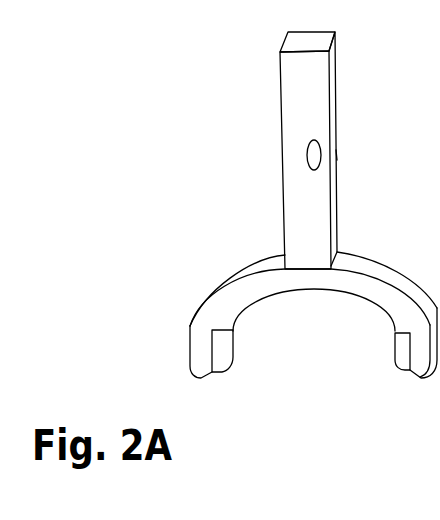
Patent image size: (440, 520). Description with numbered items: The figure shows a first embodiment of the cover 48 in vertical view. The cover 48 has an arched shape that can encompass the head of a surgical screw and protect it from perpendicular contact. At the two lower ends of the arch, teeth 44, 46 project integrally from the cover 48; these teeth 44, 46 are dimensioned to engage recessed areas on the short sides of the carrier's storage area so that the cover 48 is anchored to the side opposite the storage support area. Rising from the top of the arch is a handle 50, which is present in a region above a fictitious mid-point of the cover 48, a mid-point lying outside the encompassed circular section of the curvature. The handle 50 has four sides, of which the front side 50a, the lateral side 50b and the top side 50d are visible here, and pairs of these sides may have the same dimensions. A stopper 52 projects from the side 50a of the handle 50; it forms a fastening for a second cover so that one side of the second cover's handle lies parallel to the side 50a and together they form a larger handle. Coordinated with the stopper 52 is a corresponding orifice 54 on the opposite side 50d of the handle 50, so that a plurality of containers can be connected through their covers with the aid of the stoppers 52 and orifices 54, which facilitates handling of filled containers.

The cover 48 is at (196, 74).
The handle 50 is at (263, 137).
The side of handle 50a is at (303, 200).
The side of handle 50b is at (333, 105).
The side of handle 50d is at (335, 38).
The stopper 52 is at (313, 155).
The orifice 54 is at (338, 155).
The tooth 44 is at (222, 345).
The tooth 46 is at (400, 357).